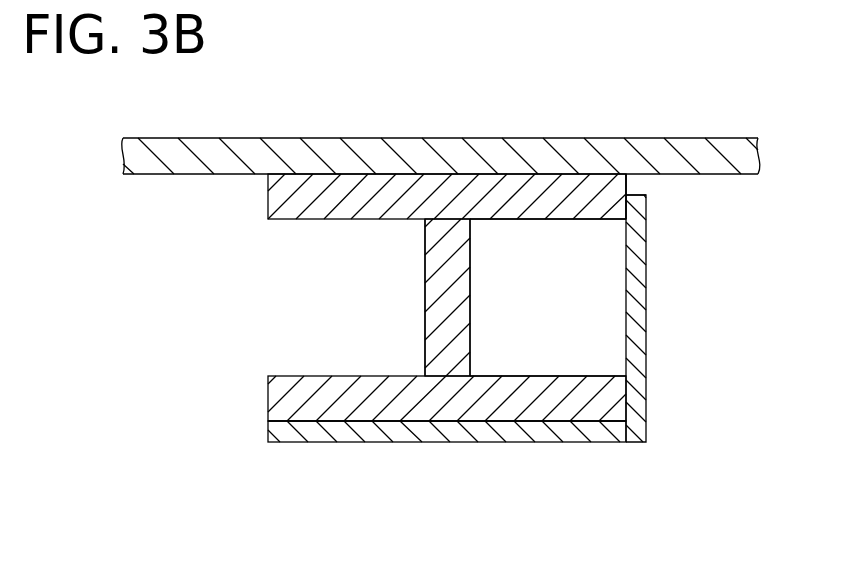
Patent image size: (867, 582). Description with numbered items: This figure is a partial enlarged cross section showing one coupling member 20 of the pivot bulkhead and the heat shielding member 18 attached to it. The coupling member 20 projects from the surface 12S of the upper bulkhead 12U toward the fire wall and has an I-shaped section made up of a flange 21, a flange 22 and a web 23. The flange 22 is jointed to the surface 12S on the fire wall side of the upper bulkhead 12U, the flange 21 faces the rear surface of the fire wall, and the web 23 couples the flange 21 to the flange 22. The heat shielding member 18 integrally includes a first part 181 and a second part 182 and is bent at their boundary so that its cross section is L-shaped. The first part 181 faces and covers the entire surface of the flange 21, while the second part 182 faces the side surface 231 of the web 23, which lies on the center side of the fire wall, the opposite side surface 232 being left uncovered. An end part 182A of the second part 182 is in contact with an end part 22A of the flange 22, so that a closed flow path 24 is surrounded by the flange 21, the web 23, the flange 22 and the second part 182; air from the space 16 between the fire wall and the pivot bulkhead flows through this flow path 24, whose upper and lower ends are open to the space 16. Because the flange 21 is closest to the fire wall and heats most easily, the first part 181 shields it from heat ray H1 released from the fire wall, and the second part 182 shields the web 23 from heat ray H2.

The upper bulkhead 12U is at (629, 138).
The surface of the upper bulkhead 12S is at (188, 175).
The coupling member 20 is at (441, 364).
The flange 21 is at (378, 513).
The flange 22 is at (299, 219).
The web 23 is at (449, 366).
The end part of the flange 22A is at (631, 180).
The side surface of the web 231 is at (471, 295).
The side surface of the web 232 is at (425, 291).
The flow path 24 is at (572, 344).
The heat shielding member 18 is at (506, 364).
The first part 181 is at (543, 442).
The second part 182 is at (681, 344).
The end part of the second part 182A is at (642, 195).
The space 16 is at (727, 344).
The heat ray H1 is at (450, 484).
The heat ray H2 is at (707, 468).